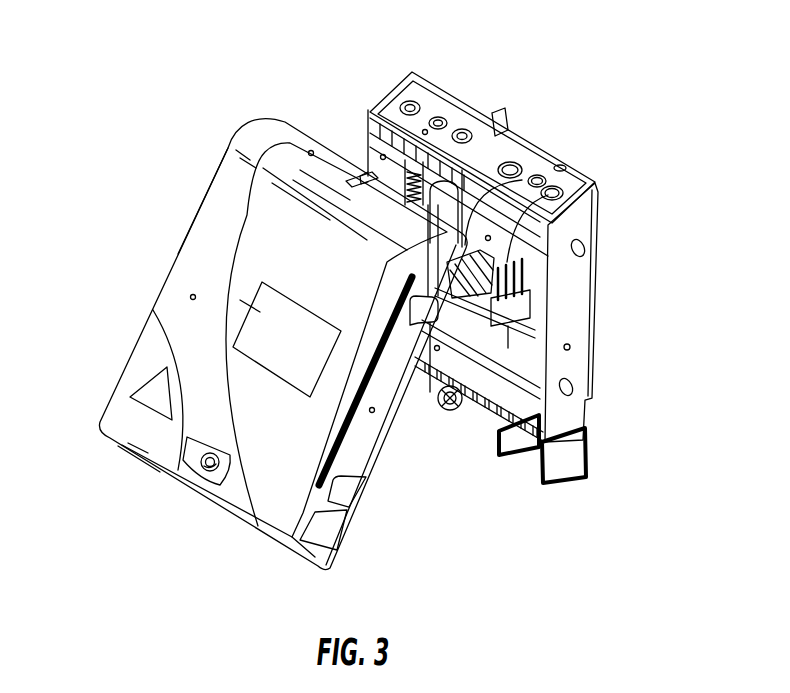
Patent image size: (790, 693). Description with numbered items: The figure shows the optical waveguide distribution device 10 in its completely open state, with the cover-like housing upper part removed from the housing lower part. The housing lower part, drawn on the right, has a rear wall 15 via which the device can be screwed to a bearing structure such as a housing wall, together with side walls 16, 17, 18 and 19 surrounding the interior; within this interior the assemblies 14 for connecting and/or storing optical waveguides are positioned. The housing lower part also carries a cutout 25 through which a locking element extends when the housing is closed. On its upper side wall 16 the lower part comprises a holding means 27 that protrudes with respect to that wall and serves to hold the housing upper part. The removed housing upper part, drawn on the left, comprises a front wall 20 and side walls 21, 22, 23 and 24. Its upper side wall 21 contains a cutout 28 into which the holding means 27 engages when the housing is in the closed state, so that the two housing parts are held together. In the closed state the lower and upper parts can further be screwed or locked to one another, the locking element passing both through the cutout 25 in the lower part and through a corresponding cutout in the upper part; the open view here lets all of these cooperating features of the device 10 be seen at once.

The optical waveguide distribution device 10 is at (614, 65).
The assemblies 14 is at (487, 335).
The rear wall 15 is at (489, 236).
The upper side wall 16 is at (426, 130).
The side wall 17 is at (381, 156).
The side wall 18 is at (436, 352).
The side wall 19 is at (571, 348).
The front wall 20 is at (192, 296).
The upper side wall 21 is at (309, 151).
The side wall 22 is at (176, 234).
The side wall 23 is at (158, 483).
The side wall 24 is at (374, 413).
The cutout 25 is at (452, 411).
The holding means 27 is at (507, 106).
The cutout 28 is at (346, 183).